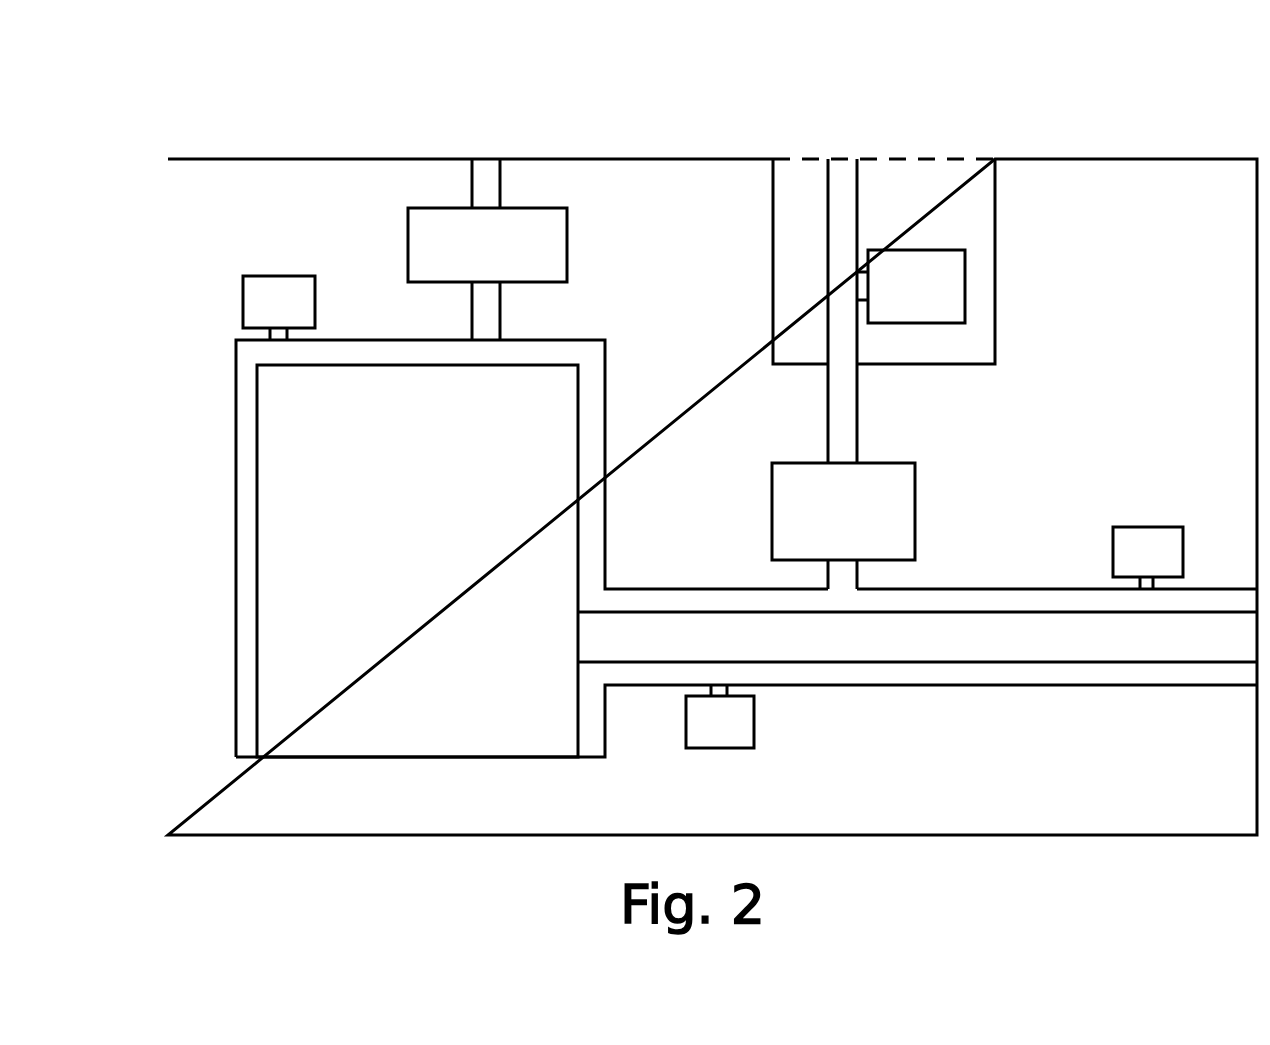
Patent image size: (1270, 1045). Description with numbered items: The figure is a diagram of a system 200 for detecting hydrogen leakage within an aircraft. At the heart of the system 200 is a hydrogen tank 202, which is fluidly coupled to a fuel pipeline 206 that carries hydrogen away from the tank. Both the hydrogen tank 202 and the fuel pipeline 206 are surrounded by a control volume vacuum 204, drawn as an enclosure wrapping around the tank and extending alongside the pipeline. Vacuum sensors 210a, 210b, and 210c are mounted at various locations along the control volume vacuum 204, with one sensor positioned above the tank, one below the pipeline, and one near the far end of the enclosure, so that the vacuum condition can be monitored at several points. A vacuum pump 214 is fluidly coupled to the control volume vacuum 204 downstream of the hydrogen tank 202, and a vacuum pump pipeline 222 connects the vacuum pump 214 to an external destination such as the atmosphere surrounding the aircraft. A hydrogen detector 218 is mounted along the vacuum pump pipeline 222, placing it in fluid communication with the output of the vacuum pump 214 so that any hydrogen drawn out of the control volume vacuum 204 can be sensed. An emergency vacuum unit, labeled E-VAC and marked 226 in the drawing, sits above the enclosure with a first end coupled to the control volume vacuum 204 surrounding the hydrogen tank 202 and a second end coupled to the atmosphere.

The system 200 is at (187, 115).
The hydrogen tank 202 is at (308, 605).
The control volume vacuum 204 is at (663, 672).
The fuel pipeline 206 is at (895, 637).
The vacuum sensor 210a is at (275, 275).
The vacuum sensor 210b is at (730, 749).
The vacuum sensor 210c is at (1153, 527).
The vacuum pump 214 is at (917, 495).
The hydrogen detector 218 is at (928, 250).
The vacuum pump pipeline 222 is at (858, 413).
The E-VAC 226 is at (567, 235).